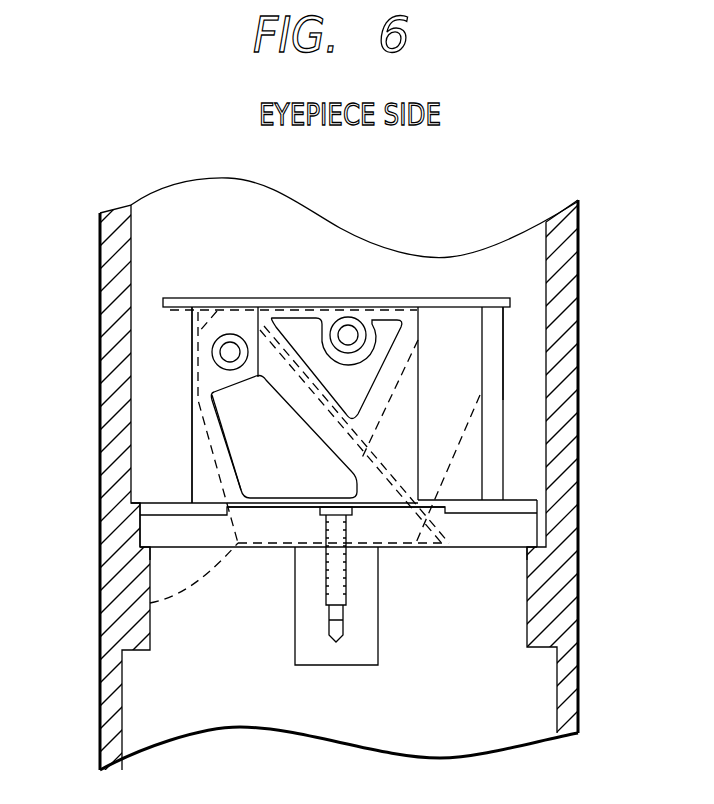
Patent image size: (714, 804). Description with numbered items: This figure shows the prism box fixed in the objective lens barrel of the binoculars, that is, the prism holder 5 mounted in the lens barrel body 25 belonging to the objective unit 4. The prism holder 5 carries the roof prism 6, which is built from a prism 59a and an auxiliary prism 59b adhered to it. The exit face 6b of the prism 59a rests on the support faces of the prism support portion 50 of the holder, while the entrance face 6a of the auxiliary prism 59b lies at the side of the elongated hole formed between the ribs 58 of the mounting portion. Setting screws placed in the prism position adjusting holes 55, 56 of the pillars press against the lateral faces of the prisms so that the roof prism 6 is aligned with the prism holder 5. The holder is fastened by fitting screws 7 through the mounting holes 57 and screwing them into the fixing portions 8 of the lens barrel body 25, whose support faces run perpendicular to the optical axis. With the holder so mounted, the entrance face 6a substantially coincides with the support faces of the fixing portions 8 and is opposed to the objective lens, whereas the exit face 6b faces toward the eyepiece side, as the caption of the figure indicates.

The objective unit 4 is at (457, 533).
The prism holder 5 is at (457, 356).
The roof prism 6 is at (488, 368).
The entrance face 6a is at (150, 603).
The exit face 6b is at (380, 307).
The screw 7 is at (345, 503).
The fixing portion 8 is at (367, 622).
The lens barrel body 25 is at (571, 422).
The prism support portion 50 is at (217, 298).
The prism position adjusting hole 55 is at (230, 352).
The prism position adjusting hole 56 is at (350, 335).
The mounting hole 57 is at (327, 550).
The rib 58 is at (150, 535).
The prism 59a is at (485, 393).
The auxiliary prism 59b is at (190, 378).